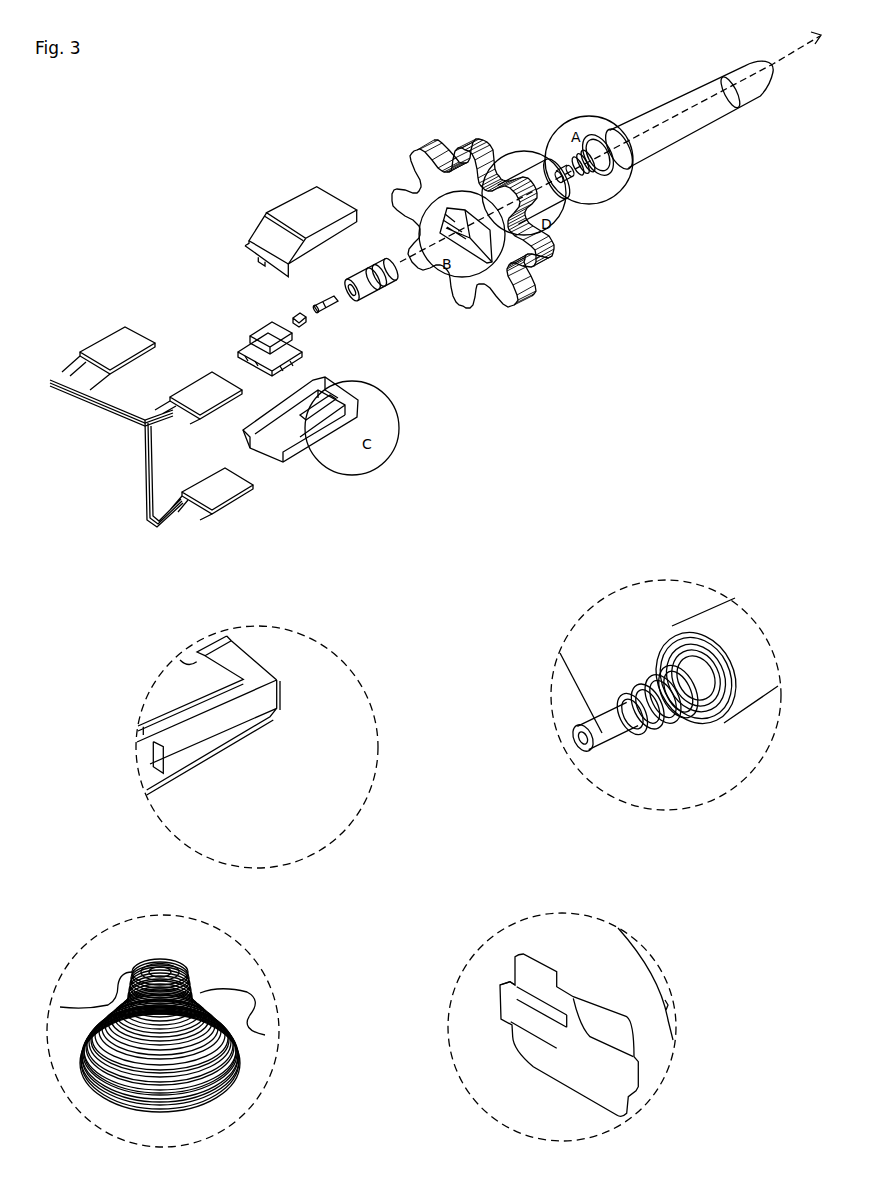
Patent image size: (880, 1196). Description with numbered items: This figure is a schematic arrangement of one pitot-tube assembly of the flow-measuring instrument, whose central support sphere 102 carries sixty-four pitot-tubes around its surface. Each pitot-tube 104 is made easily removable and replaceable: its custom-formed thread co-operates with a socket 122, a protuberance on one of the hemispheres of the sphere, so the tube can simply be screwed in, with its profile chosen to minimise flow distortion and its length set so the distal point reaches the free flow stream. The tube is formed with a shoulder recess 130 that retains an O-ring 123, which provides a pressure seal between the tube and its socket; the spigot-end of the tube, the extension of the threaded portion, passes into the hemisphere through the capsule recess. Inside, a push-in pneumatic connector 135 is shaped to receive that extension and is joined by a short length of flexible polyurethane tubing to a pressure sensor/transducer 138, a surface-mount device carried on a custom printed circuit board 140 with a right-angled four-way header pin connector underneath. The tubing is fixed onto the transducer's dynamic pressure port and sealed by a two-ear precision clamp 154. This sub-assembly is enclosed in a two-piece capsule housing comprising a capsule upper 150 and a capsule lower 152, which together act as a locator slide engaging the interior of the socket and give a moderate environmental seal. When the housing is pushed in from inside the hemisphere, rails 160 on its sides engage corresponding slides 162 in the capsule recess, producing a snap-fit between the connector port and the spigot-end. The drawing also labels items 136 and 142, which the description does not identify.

The central support sphere 102 is at (458, 177).
The pitot-tube 104 is at (705, 108).
The socket 122 is at (190, 1007).
The O-ring 123 is at (562, 185).
The shoulder recess 130 is at (464, 244).
The push-in pneumatic connector 135 is at (383, 260).
The fuse 136 is at (318, 300).
The pressure sensor/transducer 138 is at (290, 338).
The printed circuit board 140 is at (302, 358).
The flex circuit with pads 142 is at (222, 488).
The capsule upper 150 is at (293, 215).
The capsule lower 152 is at (287, 430).
The 2-ear precision clamp 154 is at (293, 320).
The rails 160 is at (257, 703).
The slides 162 is at (508, 1002).